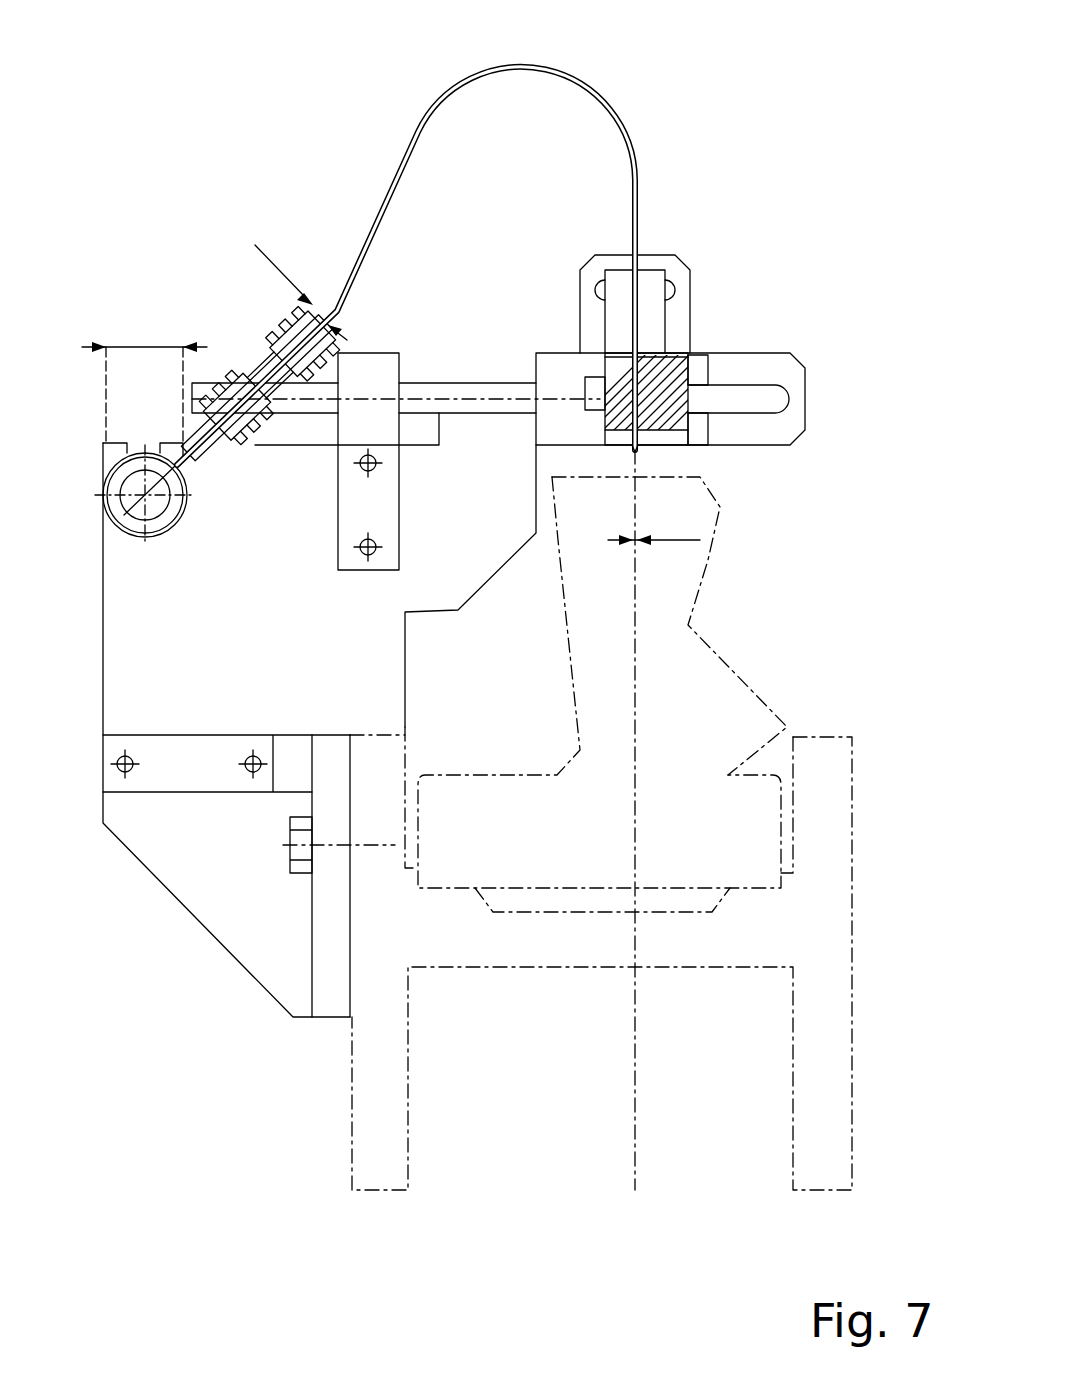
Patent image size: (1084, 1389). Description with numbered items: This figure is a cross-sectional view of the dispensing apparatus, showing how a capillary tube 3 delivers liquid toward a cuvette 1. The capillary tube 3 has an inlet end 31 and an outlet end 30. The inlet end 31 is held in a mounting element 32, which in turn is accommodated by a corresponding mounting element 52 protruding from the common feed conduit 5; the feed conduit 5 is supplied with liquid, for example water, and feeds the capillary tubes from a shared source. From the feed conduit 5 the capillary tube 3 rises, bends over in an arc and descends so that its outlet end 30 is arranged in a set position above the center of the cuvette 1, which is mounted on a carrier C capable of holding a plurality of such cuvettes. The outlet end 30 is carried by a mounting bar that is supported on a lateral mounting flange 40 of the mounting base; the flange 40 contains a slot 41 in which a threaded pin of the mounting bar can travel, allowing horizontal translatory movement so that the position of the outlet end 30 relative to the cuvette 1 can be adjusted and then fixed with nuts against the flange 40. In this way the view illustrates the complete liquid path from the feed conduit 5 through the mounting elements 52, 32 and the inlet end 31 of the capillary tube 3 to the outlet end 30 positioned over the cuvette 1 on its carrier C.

The cuvette 1 is at (790, 658).
The capillary tube 3 is at (640, 112).
The feed conduit 5 is at (152, 540).
The outlet end 30 is at (642, 452).
The inlet end 31 is at (257, 390).
The mounting element 32 is at (283, 337).
The lateral mounting flange 40 is at (720, 350).
The slot 41 is at (772, 402).
The mounting element 52 is at (236, 406).
The carrier C is at (463, 845).